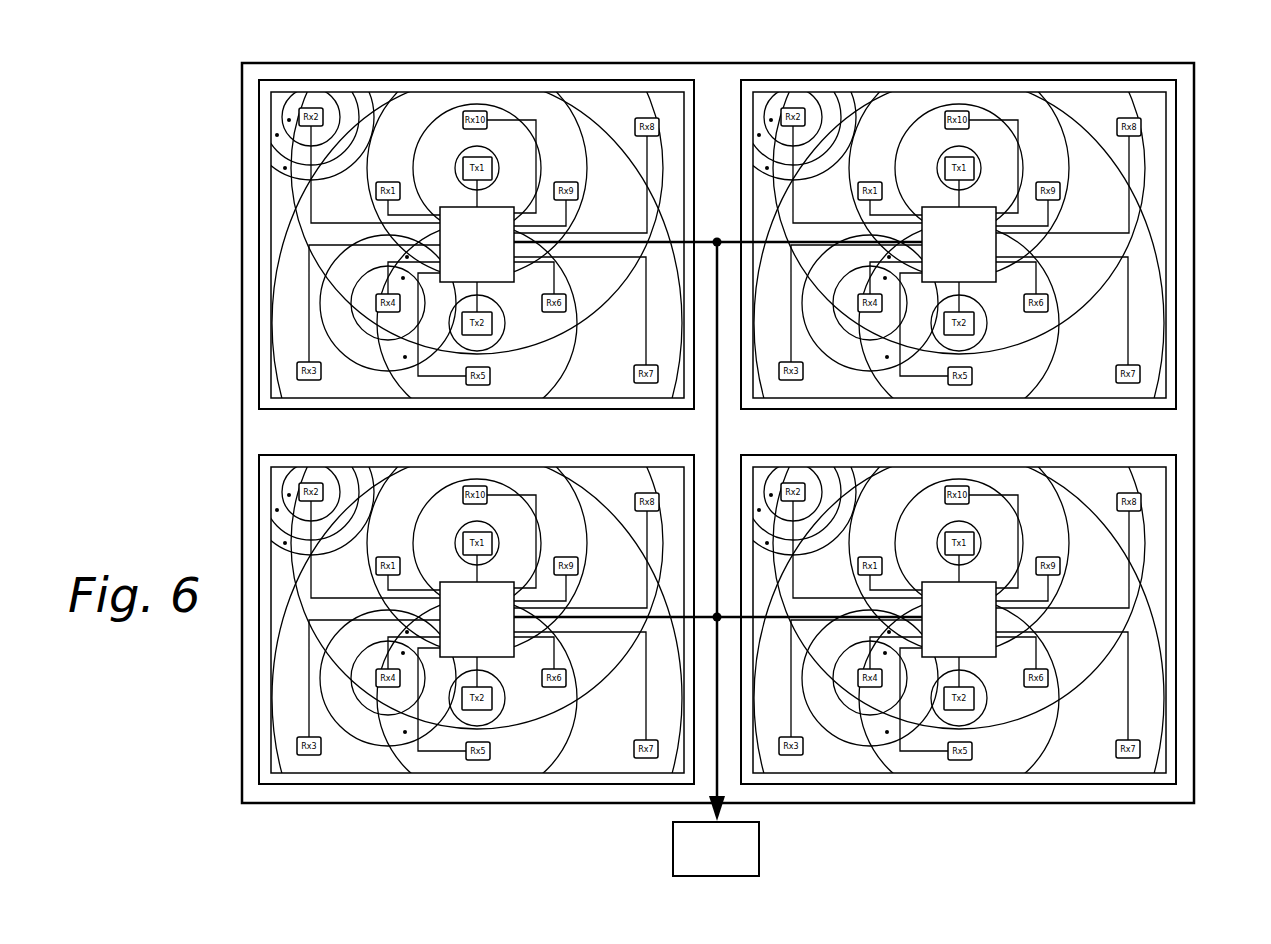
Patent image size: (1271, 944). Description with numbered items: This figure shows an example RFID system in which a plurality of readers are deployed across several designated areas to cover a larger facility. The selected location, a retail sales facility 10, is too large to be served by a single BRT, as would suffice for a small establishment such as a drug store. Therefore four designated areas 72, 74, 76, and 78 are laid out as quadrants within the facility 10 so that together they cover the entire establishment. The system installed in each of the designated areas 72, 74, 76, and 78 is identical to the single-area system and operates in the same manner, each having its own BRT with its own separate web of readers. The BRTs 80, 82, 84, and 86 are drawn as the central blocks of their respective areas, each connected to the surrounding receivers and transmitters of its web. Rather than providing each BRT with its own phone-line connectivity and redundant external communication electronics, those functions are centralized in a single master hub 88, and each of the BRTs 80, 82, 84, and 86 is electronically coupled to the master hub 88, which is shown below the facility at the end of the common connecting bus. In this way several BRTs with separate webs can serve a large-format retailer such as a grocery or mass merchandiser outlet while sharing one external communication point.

The retail sales facility 10 is at (1206, 249).
The designated area 72 is at (317, 85).
The designated area 74 is at (1095, 85).
The designated area 76 is at (1075, 782).
The designated area 78 is at (395, 781).
The BRT 80 is at (449, 207).
The BRT 82 is at (980, 207).
The BRT 84 is at (990, 657).
The BRT 86 is at (510, 657).
The master hub 88 is at (672, 848).